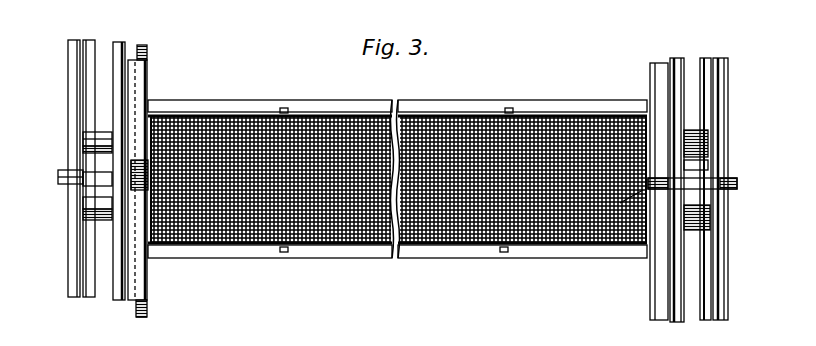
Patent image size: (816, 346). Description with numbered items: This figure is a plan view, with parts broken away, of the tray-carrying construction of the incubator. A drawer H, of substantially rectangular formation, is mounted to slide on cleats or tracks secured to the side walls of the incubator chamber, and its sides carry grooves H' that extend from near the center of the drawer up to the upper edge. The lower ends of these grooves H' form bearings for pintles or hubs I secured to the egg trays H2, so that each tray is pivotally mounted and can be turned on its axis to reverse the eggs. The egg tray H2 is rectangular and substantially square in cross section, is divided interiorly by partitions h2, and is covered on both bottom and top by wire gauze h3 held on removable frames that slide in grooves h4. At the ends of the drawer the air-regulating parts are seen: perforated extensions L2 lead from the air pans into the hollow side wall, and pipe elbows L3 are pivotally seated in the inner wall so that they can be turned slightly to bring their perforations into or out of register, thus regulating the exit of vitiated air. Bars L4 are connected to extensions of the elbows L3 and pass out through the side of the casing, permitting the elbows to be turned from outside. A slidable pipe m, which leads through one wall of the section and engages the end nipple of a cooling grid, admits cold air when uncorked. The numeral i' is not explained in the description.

The bar L4 is at (94, 45).
The drawer H is at (148, 181).
The perforated extension L2 is at (146, 306).
The pipe elbow L3 is at (90, 140).
The slidable pipe m is at (60, 184).
The pintle I is at (132, 177).
The groove H' is at (121, 179).
The pin i' is at (118, 202).
The egg tray H2 is at (397, 167).
The wire gauze h3 is at (447, 118).
The groove h4 is at (213, 114).
The partition h2 is at (270, 243).